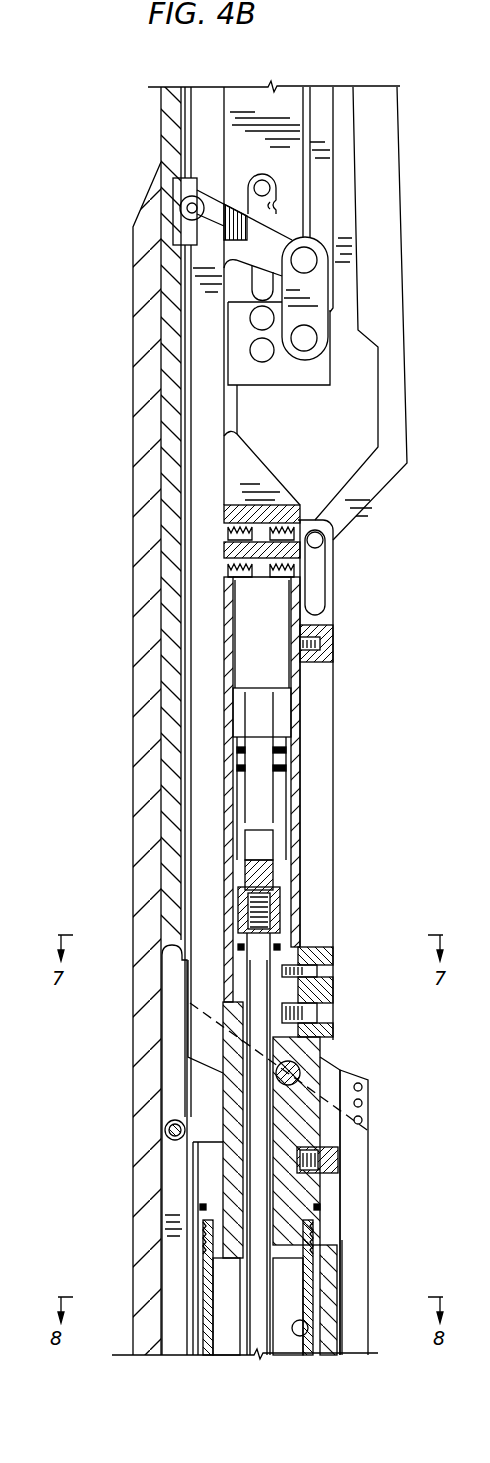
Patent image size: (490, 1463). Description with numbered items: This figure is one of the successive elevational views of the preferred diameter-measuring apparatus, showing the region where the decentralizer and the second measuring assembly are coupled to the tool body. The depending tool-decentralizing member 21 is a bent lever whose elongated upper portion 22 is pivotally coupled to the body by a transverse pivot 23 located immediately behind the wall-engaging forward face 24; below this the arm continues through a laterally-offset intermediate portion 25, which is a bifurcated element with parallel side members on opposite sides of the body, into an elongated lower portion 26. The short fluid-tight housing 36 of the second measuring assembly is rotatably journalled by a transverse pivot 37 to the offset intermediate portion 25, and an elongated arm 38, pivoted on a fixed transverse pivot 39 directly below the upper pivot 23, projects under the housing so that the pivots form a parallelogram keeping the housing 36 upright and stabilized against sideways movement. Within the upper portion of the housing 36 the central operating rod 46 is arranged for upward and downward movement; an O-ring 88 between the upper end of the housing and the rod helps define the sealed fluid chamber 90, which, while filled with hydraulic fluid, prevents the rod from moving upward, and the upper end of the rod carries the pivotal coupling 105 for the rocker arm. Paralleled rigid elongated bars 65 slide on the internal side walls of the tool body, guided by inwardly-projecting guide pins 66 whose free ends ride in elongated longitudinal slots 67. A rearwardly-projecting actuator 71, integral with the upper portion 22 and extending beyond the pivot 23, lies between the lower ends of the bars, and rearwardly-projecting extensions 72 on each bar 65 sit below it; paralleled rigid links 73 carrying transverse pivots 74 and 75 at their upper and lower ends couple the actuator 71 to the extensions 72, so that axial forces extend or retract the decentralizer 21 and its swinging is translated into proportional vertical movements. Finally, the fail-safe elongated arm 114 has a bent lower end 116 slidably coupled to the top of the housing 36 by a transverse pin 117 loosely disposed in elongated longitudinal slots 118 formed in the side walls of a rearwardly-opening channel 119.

The depending tool-decentralizing member 21 is at (395, 1144).
The elongated upper portion 22 is at (200, 332).
The transverse pivot 23 is at (184, 203).
The wall-engaging forward face 24 is at (148, 232).
The laterally-offset intermediate portion 25 is at (330, 1087).
The elongated lower portion 26 is at (353, 1190).
The fluid-tight housing 36 is at (312, 1267).
The transverse pivot 37 is at (300, 1068).
The elongated arm 38 is at (173, 1203).
The fixed transverse pivot 39 is at (165, 1126).
The central operating rod 46 is at (258, 947).
The paralleled rigid elongated bars 65 is at (290, 158).
The inwardly-projecting guide pins 66 is at (272, 190).
The elongated longitudinal slots 67 is at (277, 207).
The rearwardly-projecting actuator 71 is at (240, 215).
The rearwardly-projecting extensions 72 is at (315, 370).
The paralleled rigid links 73 is at (313, 287).
The transverse pivot 74 is at (318, 258).
The transverse pivot 75 is at (318, 338).
The O-ring 88 is at (282, 1248).
The sealed fluid chamber 90 is at (305, 1333).
The pivotal coupling 105 is at (298, 763).
The elongated arm 114 is at (388, 105).
The bent lower end 116 is at (373, 483).
The transverse pin 117 is at (324, 542).
The elongated longitudinal slots 118 is at (325, 592).
The rearwardly-opening channel 119 is at (320, 712).